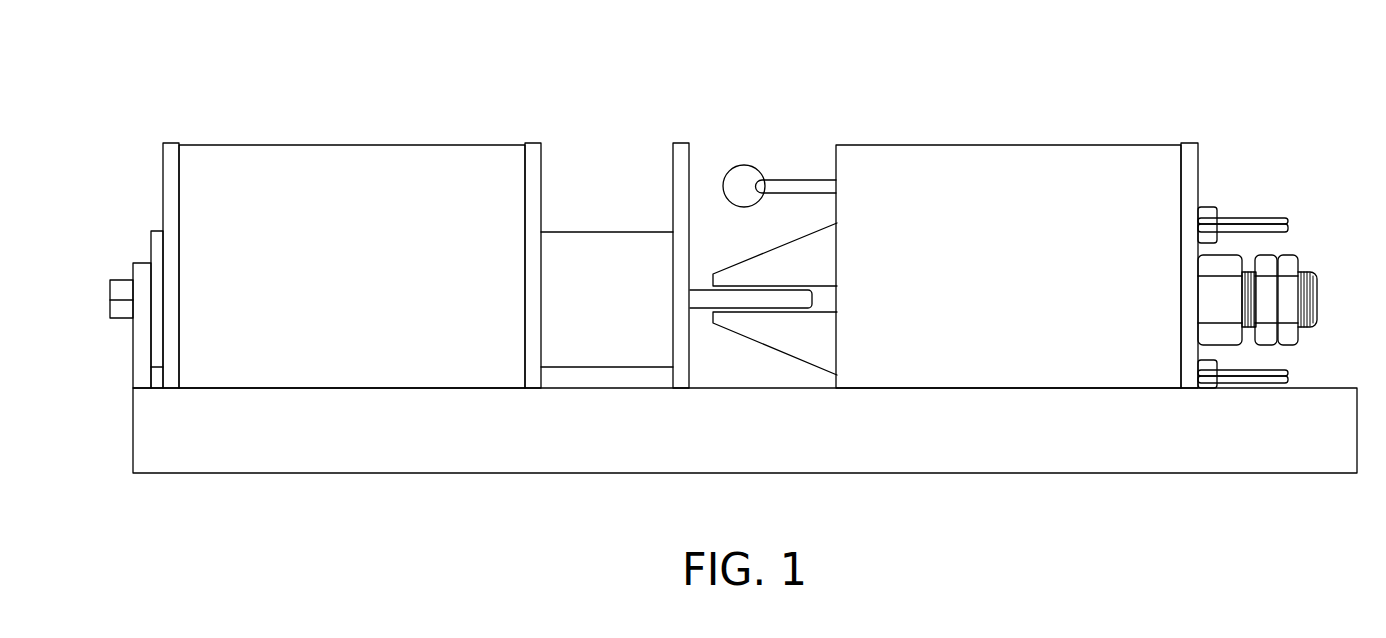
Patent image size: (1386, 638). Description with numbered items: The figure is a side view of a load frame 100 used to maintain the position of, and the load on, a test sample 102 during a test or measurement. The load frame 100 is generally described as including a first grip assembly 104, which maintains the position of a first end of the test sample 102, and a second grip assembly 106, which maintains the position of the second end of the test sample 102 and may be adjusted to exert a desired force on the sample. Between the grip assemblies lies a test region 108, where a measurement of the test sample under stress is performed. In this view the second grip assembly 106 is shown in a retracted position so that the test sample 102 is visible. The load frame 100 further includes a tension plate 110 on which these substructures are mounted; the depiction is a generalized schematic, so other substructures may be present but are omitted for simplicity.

The load frame 100 is at (1197, 68).
The test sample 102 is at (700, 306).
The first grip assembly 104 is at (543, 130).
The second grip assembly 106 is at (1313, 130).
The test region 108 is at (673, 130).
The tension plate 110 is at (422, 413).